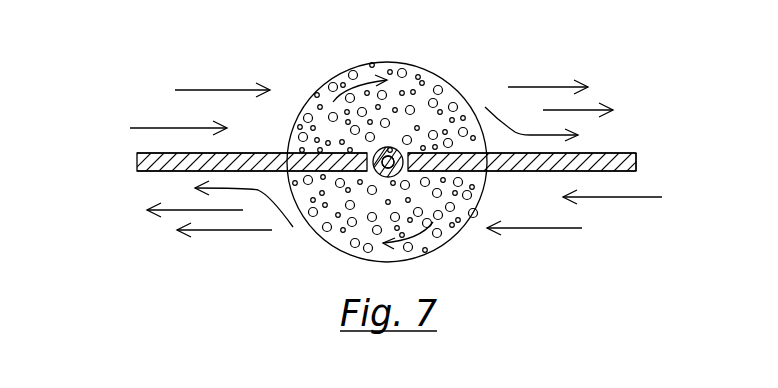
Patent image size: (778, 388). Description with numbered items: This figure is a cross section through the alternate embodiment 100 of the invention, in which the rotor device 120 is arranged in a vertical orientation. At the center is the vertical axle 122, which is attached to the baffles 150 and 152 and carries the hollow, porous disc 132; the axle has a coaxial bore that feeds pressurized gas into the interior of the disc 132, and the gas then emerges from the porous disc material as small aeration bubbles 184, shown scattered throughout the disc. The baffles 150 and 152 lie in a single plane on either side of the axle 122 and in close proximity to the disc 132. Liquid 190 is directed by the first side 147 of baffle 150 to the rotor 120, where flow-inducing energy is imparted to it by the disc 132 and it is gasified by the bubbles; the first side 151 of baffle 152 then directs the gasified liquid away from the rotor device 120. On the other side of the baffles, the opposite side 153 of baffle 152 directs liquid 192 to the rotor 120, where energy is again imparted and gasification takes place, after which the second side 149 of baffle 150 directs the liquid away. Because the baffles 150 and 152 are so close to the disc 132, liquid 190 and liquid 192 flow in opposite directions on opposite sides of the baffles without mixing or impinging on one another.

The alternate embodiment 100 is at (123, 92).
The rotor device 120 is at (522, 70).
The vertical axle 122 is at (388, 147).
The porous disc 132 is at (322, 93).
The first side of baffle 150 147 is at (250, 152).
The second side of baffle 150 149 is at (167, 171).
The baffle 150 is at (148, 153).
The first side of baffle 152 151 is at (612, 150).
The baffle 152 is at (623, 153).
The opposite side of baffle 152 153 is at (625, 171).
The aeration bubbles 184 is at (400, 72).
The liquid 190 is at (232, 90).
The liquid 192 is at (608, 197).